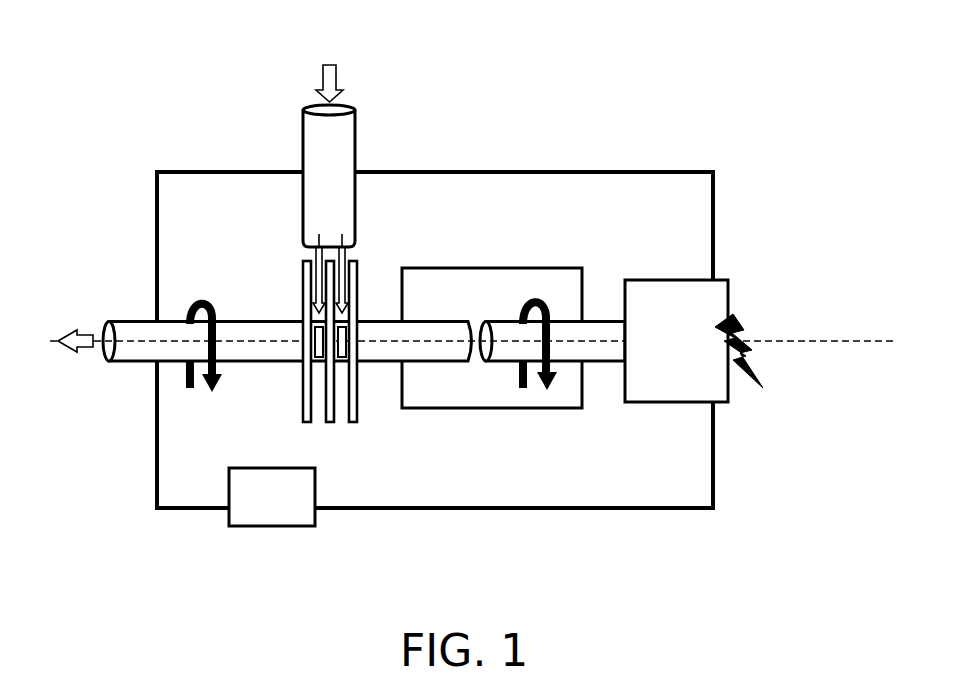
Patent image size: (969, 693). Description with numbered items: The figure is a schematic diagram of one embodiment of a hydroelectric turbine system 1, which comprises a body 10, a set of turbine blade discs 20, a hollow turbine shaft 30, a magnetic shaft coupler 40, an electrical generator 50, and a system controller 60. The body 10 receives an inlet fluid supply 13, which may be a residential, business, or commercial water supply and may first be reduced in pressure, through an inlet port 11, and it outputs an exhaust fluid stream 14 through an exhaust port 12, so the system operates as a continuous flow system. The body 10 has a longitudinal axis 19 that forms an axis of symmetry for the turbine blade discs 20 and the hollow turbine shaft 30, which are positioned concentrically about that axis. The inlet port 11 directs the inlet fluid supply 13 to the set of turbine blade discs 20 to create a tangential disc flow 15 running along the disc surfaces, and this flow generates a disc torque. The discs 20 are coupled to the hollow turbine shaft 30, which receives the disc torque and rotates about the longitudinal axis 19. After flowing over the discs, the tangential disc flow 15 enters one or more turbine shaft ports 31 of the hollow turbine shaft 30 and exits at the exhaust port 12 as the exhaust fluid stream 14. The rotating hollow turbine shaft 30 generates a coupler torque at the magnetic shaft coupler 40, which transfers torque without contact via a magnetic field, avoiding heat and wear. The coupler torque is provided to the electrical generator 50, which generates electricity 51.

The hydroelectric turbine system 1 is at (194, 60).
The body 10 is at (668, 497).
The inlet port 11 is at (344, 136).
The exhaust port 12 is at (142, 332).
The inlet fluid supply 13 is at (341, 73).
The exhaust fluid stream 14 is at (83, 350).
The tangential disc flow 15 is at (354, 282).
The longitudinal axis 19 is at (803, 345).
The set of turbine blade discs 20 is at (321, 351).
The hollow turbine shaft 30 is at (275, 352).
The turbine shaft ports 31 is at (317, 357).
The magnetic shaft coupler 40 is at (568, 404).
The electrical generator 50 is at (672, 278).
The electricity 51 is at (750, 333).
The system controller 60 is at (252, 527).